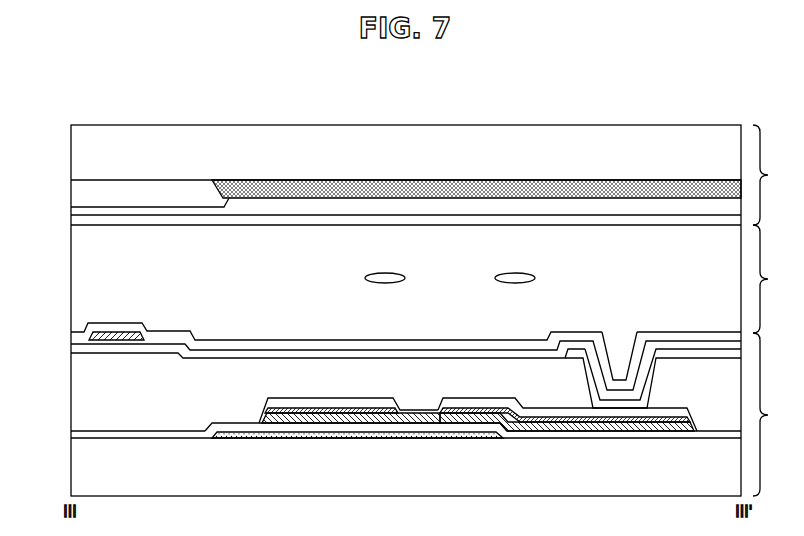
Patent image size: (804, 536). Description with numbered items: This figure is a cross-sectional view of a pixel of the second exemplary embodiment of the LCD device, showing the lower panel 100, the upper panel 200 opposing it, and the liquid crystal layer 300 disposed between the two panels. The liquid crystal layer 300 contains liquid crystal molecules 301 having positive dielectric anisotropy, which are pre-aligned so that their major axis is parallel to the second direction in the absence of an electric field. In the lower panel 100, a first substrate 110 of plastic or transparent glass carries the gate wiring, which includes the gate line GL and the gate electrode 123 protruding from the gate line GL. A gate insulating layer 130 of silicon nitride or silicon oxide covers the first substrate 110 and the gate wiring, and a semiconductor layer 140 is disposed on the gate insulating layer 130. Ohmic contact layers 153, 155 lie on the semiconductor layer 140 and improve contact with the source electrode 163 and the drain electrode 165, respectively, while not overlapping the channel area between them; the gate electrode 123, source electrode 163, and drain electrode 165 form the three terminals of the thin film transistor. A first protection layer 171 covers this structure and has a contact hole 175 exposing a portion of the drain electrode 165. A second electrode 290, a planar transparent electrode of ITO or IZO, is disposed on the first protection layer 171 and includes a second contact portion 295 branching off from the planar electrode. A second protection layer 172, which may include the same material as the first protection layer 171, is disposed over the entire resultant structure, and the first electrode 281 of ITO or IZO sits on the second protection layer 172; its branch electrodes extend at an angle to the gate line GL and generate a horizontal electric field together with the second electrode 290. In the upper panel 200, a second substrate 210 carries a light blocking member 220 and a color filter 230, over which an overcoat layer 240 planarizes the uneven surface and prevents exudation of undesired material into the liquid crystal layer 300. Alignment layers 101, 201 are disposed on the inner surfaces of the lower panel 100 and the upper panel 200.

The lower panel 100 is at (777, 414).
The upper panel 200 is at (777, 175).
The liquid crystal layer 300 is at (777, 279).
The liquid crystal molecules 301 is at (494, 278).
The second substrate 210 is at (500, 147).
The light blocking member 220 is at (653, 190).
The color filter 230 is at (150, 195).
The overcoat layer 240 is at (282, 205).
The alignment layer 201 is at (363, 220).
The alignment layer 101 is at (100, 323).
The first electrode 281 is at (97, 338).
The second protection layer 172 is at (78, 344).
The second electrode 290 is at (78, 353).
The second contact portion 295 is at (575, 356).
The first protection layer 171 is at (82, 396).
The contact hole 175 is at (619, 348).
The gate line GL is at (221, 434).
The gate electrode 123 is at (428, 435).
The first substrate 110 is at (275, 475).
The gate insulating layer 130 is at (689, 437).
The semiconductor layer 140 is at (470, 420).
The ohmic contact layer 153 is at (378, 414).
The source electrode 163 is at (327, 405).
The ohmic contact layer 155 is at (485, 413).
The drain electrode 165 is at (638, 412).